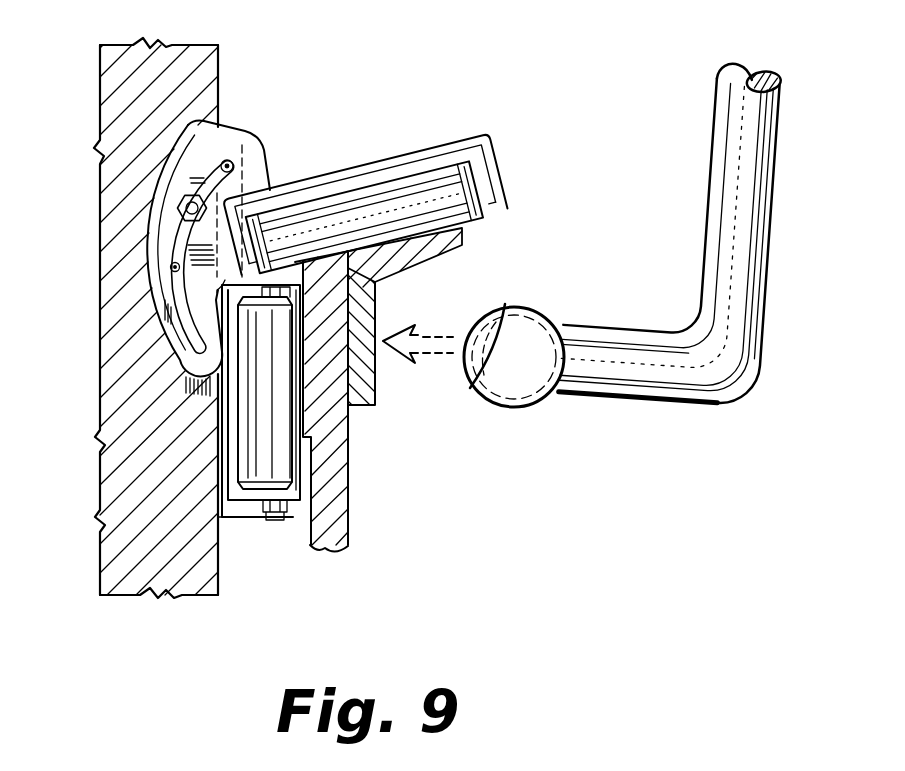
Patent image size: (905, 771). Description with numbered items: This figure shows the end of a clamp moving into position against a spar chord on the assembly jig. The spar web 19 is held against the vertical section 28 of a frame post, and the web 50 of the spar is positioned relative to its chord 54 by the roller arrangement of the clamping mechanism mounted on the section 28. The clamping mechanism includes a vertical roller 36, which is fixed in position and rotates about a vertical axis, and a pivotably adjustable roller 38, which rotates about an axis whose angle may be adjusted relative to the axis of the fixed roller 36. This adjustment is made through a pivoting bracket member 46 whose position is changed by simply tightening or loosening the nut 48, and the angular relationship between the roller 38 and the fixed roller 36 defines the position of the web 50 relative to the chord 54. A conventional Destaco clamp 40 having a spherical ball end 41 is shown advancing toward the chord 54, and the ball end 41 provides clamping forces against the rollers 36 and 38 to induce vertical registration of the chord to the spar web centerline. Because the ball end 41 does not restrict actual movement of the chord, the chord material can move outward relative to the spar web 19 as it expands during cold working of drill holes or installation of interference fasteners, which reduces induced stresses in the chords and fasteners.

The spar web 19 is at (345, 556).
The vertical section 28 is at (122, 503).
The vertical roller 36 is at (292, 438).
The pivotably adjustable roller 38 is at (400, 190).
The Destaco clamp 40 is at (688, 372).
The spherical ball end 41 is at (470, 368).
The pivoting bracket member 46 is at (318, 177).
The nut 48 is at (182, 128).
The web 50 is at (323, 522).
The lower chord 54 is at (442, 262).